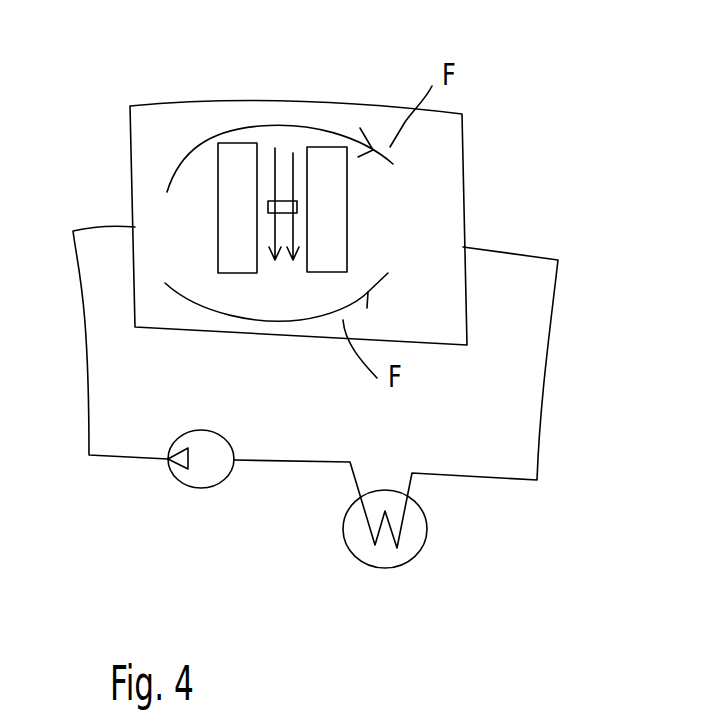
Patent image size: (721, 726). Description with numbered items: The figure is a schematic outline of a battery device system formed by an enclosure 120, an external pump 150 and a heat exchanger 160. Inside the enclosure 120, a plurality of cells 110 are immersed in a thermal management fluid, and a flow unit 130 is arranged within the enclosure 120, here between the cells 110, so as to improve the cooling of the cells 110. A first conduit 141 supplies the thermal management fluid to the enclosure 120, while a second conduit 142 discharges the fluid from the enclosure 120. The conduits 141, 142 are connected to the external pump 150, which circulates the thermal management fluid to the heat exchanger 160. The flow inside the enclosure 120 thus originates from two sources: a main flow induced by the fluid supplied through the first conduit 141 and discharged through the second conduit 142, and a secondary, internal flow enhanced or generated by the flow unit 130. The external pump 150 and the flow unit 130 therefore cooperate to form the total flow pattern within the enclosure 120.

The cells 110 is at (228, 145).
The enclosure 120 is at (473, 173).
The flow unit 130 is at (285, 197).
The first conduit 141 is at (85, 352).
The second conduit 142 is at (558, 362).
The external pump 150 is at (185, 488).
The heat exchanger 160 is at (428, 543).